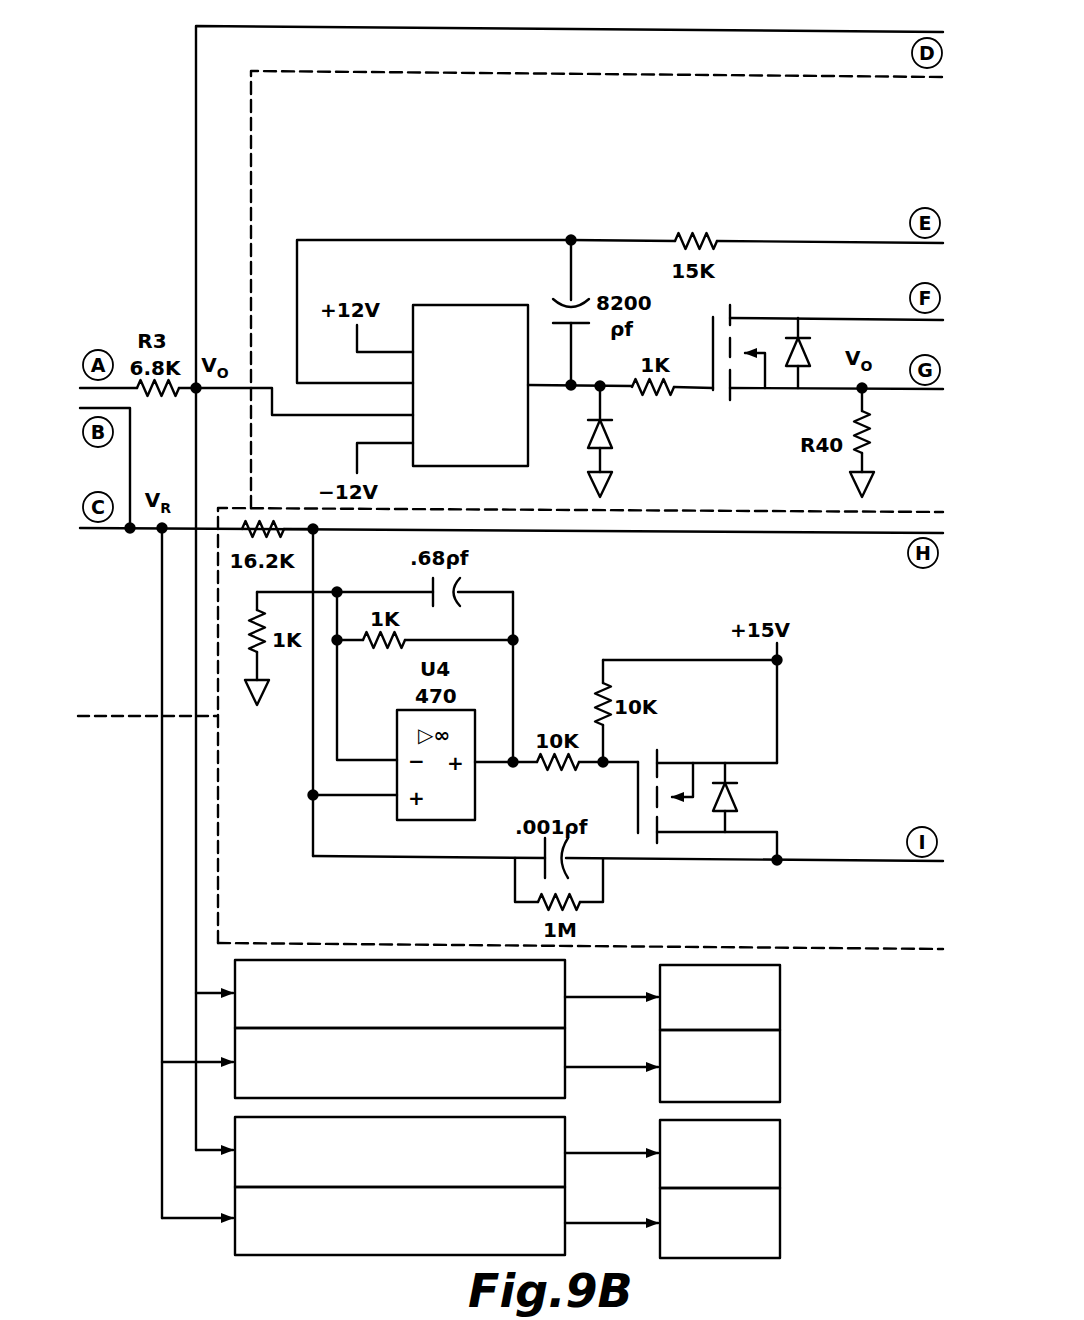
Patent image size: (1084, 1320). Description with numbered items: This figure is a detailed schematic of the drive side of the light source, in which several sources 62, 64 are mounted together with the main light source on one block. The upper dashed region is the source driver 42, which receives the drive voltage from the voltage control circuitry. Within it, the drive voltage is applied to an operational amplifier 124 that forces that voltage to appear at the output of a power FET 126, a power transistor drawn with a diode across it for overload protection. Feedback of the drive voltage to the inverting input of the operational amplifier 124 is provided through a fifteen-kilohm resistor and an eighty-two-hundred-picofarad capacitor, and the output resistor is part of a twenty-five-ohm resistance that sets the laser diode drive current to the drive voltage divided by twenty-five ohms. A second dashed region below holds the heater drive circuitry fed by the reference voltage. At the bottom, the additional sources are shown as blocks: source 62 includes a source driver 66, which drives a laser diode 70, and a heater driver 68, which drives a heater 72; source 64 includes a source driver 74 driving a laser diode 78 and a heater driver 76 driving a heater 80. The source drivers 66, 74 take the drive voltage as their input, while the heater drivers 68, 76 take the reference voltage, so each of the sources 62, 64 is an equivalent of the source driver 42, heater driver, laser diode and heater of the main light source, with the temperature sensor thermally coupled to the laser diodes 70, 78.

The source driver 42 is at (372, 74).
The operational amplifier 124 is at (521, 304).
The power FET 126 is at (760, 318).
The source 62 is at (790, 1033).
The source 64 is at (353, 1111).
The source driver 66 is at (565, 986).
The heater driver 68 is at (565, 1080).
The laser diode 70 is at (781, 975).
The heater 72 is at (781, 1080).
The source driver 74 is at (565, 1144).
The heater driver 76 is at (565, 1238).
The laser diode 78 is at (781, 1152).
The heater 80 is at (781, 1225).